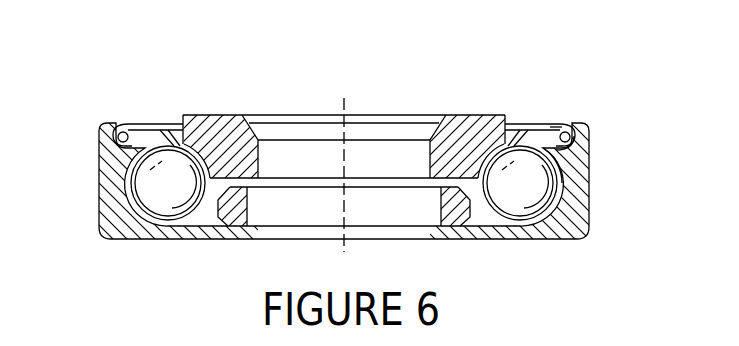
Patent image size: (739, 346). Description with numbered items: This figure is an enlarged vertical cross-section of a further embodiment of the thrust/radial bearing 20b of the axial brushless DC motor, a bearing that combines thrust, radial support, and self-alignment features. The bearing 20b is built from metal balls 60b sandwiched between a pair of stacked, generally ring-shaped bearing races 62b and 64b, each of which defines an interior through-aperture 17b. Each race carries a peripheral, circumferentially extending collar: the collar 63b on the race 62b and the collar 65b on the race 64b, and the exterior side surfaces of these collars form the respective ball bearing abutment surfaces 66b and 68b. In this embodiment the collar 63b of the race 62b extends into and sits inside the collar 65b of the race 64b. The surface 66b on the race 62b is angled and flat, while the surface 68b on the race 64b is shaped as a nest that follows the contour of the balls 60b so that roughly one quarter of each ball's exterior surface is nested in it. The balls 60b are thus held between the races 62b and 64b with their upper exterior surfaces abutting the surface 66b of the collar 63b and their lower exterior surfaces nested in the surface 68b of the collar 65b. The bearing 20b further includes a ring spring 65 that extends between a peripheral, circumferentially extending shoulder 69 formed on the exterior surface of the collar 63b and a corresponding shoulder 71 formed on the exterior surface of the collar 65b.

The bearing 20b is at (359, 155).
The interior through-aperture 17b is at (370, 157).
The balls 60b is at (167, 197).
The bearing race 62b is at (490, 117).
The collar 63b is at (510, 127).
The shoulder 69 is at (523, 123).
The ball bearing abutment surface 66b is at (140, 122).
The ring spring 65 is at (557, 127).
The shoulder 71 is at (565, 153).
The collar 65b is at (565, 190).
The bearing race 64b is at (587, 210).
The ball bearing abutment surface 68b is at (135, 198).